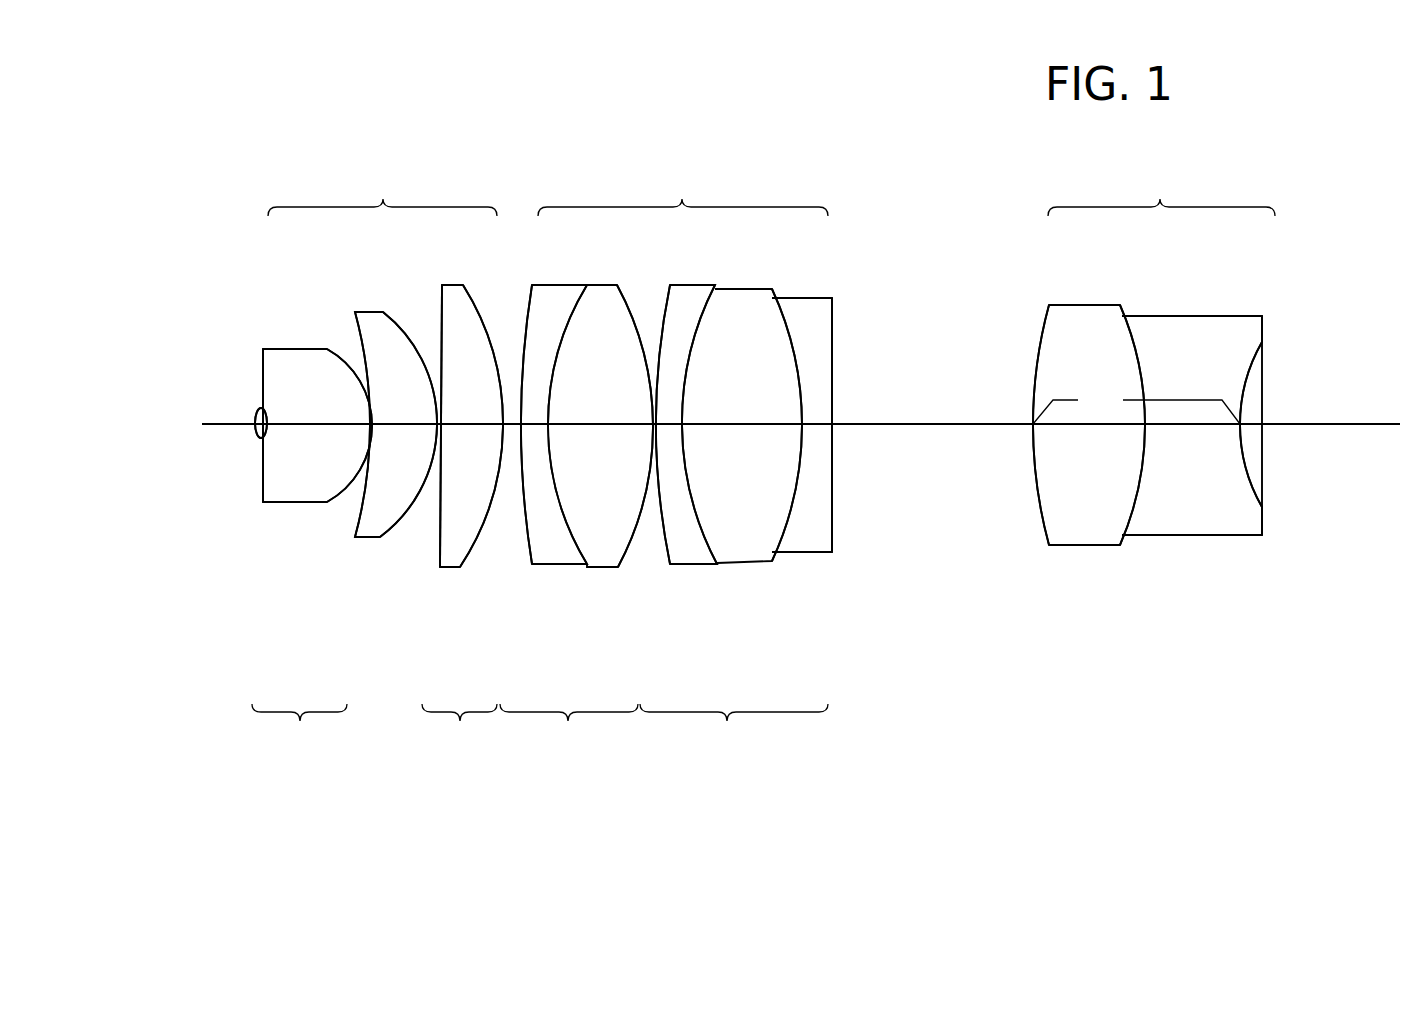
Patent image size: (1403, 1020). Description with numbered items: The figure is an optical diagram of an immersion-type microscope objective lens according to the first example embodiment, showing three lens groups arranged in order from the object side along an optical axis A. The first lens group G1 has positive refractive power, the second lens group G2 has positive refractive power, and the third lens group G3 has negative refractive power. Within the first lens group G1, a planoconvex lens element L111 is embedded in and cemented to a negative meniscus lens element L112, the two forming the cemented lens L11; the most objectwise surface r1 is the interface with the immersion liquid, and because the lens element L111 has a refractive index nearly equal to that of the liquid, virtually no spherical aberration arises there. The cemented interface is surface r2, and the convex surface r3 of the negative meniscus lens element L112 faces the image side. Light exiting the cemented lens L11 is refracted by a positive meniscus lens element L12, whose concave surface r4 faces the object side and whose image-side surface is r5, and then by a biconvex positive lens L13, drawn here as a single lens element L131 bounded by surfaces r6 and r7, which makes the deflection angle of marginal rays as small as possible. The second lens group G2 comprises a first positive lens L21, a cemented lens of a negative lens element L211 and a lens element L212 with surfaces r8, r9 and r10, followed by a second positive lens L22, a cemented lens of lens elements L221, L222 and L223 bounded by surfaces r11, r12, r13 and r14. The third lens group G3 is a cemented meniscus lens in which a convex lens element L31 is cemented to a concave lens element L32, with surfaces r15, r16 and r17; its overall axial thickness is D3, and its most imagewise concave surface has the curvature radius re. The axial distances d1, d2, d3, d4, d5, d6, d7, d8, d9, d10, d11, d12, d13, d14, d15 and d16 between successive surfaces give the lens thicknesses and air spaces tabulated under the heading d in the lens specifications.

The optical axis A is at (224, 424).
The first lens group G1 is at (382, 190).
The second lens group G2 is at (683, 190).
The third lens group G3 is at (1161, 190).
The planoconvex lens element L111 is at (258, 414).
The negative meniscus lens element L112 is at (303, 349).
The positive meniscus lens element L12 is at (366, 312).
The lens element of third lens unit L131 is at (455, 300).
The negative lens element L211 is at (556, 298).
The second lens element of fourth lens unit L212 is at (605, 293).
The first lens element of fifth lens unit L221 is at (695, 297).
The second lens element of fifth lens unit L222 is at (757, 303).
The third lens element of fifth lens unit L223 is at (813, 305).
The convex lens element L31 is at (1080, 308).
The concave lens element L32 is at (1193, 320).
The cemented lens L11 is at (299, 734).
The positive lens L13 is at (459, 734).
The first positive lens L21 is at (569, 734).
The second positive lens L22 is at (734, 734).
The overall axial thickness of the cemented meniscus lens D3 is at (1136, 404).
The interface between immersion liquid and lens L111 r1 is at (258, 430).
The curvature radius of second surface r2 is at (267, 436).
The convex surface of negative meniscus lens element r3 is at (352, 506).
The concave surface of positive meniscus lens element r4 is at (358, 498).
The curvature radius of fifth surface r5 is at (418, 522).
The curvature radius of sixth surface r6 is at (443, 560).
The curvature radius of seventh surface r7 is at (492, 515).
The curvature radius of eighth surface r8 is at (528, 515).
The curvature radius of ninth surface r9 is at (566, 510).
The curvature radius of tenth surface r10 is at (640, 548).
The curvature radius of eleventh surface r11 is at (667, 540).
The curvature radius of twelfth surface r12 is at (722, 540).
The curvature radius of thirteenth surface r13 is at (792, 492).
The curvature radius of fourteenth surface r14 is at (832, 488).
The curvature radius of fifteenth surface r15 is at (1038, 488).
The curvature radius of sixteenth surface r16 is at (1135, 493).
The curvature radius of seventeenth surface r17 is at (1248, 480).
The curvature radius of most imagewise surface re is at (1262, 490).
The axial distance between first and second surfaces d1 is at (259, 436).
The axial distance between second and third surfaces d2 is at (334, 428).
The axial distance between third and fourth surfaces d3 is at (370, 430).
The axial distance between fourth and fifth surfaces d4 is at (408, 428).
The axial distance between fifth and sixth surfaces d5 is at (438, 430).
The axial distance between sixth and seventh surfaces d6 is at (486, 428).
The axial distance between seventh and eighth surfaces d7 is at (512, 430).
The axial distance between eighth and ninth surfaces d8 is at (535, 428).
The axial distance between ninth and tenth surfaces d9 is at (600, 428).
The axial distance between tenth and eleventh surfaces d10 is at (655, 430).
The axial distance between eleventh and twelfth surfaces d11 is at (668, 430).
The axial distance between twelfth and thirteenth surfaces d12 is at (745, 428).
The axial distance between thirteenth and fourteenth surfaces d13 is at (832, 455).
The axial distance between fourteenth and fifteenth surfaces d14 is at (930, 428).
The axial distance between fifteenth and sixteenth surfaces d15 is at (1090, 428).
The axial distance between sixteenth and seventeenth surfaces d16 is at (1183, 428).